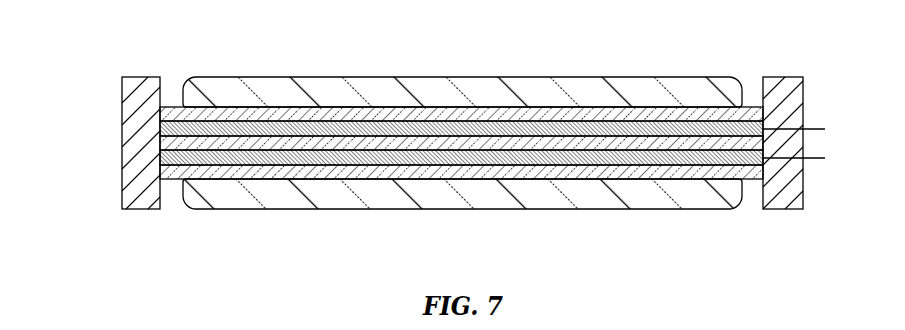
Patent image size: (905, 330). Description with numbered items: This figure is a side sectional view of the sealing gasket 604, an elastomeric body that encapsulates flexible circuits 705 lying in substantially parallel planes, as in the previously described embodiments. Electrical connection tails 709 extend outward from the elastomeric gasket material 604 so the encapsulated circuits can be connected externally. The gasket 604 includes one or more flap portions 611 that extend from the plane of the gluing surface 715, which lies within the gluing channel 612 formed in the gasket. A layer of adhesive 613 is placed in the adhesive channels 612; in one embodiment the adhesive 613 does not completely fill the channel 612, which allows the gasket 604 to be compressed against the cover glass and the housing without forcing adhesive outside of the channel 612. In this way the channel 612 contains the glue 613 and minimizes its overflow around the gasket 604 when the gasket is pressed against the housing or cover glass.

The gasket 604 is at (71, 90).
The flap portion 611 is at (138, 77).
The adhesive channel 612 is at (168, 94).
The adhesive 613 is at (578, 77).
The flexible circuit 705 is at (328, 127).
The electrical connection tail 709 is at (823, 128).
The gluing surface 715 is at (750, 106).